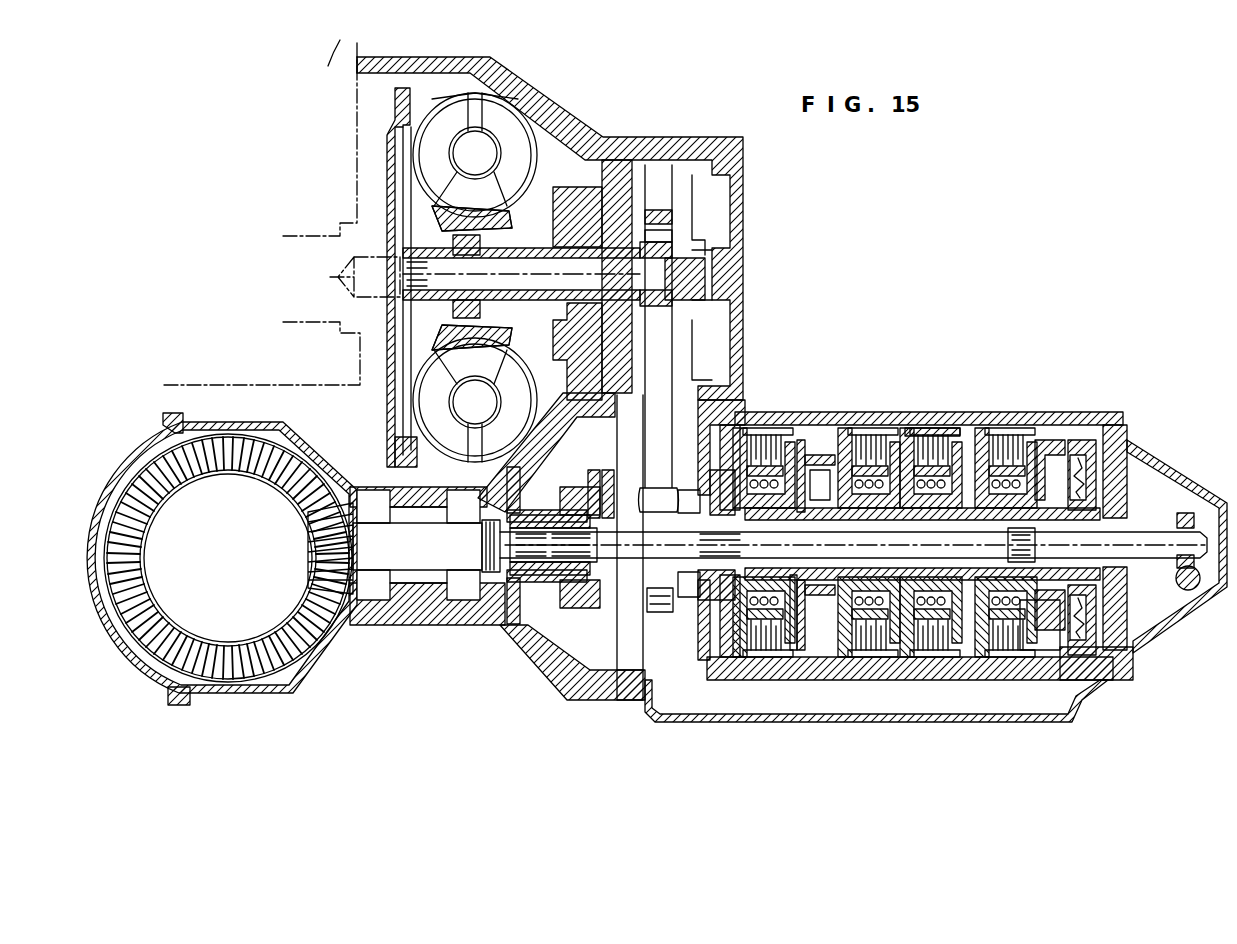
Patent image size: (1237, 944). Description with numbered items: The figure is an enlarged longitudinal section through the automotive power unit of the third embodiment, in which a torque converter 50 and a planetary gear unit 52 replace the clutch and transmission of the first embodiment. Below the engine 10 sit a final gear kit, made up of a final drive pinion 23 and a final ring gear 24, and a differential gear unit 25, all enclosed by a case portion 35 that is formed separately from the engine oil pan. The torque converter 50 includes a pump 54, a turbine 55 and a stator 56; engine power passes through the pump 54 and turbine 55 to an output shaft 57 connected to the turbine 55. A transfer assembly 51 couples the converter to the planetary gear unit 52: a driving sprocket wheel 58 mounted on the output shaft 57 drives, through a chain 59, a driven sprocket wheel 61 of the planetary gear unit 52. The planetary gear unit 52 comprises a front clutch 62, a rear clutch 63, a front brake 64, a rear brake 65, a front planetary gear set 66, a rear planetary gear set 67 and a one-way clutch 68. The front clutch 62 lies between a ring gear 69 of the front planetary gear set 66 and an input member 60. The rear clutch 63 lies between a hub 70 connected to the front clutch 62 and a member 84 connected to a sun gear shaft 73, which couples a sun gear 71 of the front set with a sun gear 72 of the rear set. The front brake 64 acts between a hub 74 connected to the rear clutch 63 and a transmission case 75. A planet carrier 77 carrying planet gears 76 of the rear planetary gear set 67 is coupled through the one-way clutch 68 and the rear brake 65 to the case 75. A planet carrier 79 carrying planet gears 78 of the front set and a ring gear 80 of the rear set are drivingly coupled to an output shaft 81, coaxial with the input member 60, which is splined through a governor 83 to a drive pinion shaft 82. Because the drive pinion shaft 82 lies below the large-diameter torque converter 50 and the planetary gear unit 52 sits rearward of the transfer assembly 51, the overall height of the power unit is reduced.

The engine 10 is at (350, 60).
The final drive pinion 23 is at (315, 546).
The final ring gear 24 is at (312, 628).
The differential gear unit 25 is at (196, 612).
The case portion 35 is at (207, 431).
The torque converter 50 is at (533, 110).
The transfer assembly 51 is at (672, 482).
The planetary gear unit 52 is at (976, 398).
The pump 54 is at (537, 128).
The turbine 55 is at (434, 112).
The stator 56 is at (478, 182).
The output shaft 57 is at (526, 270).
The driving sprocket wheel 58 is at (656, 225).
The chain 59 is at (632, 450).
The input member 60 is at (702, 600).
The driven sprocket wheel 61 is at (645, 598).
The front clutch 62 is at (776, 440).
The rear clutch 63 is at (860, 440).
The front brake 64 is at (925, 440).
The rear brake 65 is at (1008, 438).
The front planetary gear set 66 is at (820, 630).
The rear planetary gear set 67 is at (1040, 640).
The one-way clutch 68 is at (986, 640).
The ring gear 69 is at (810, 610).
The hub 70 is at (814, 450).
The sun gear 71 is at (810, 615).
The sun gear 72 is at (1036, 635).
The sun gear shaft 73 is at (963, 630).
The hub 74 is at (896, 630).
The transmission case 75 is at (1087, 412).
The planet gears 76 is at (1040, 445).
The planet carrier 77 is at (1095, 615).
The planet gears 78 is at (828, 460).
The planet carrier 79 is at (794, 625).
The ring gear 80 is at (1090, 418).
The output shaft 81 is at (1148, 550).
The drive pinion shaft 82 is at (440, 575).
The governor 83 is at (572, 487).
The member 84 is at (908, 428).